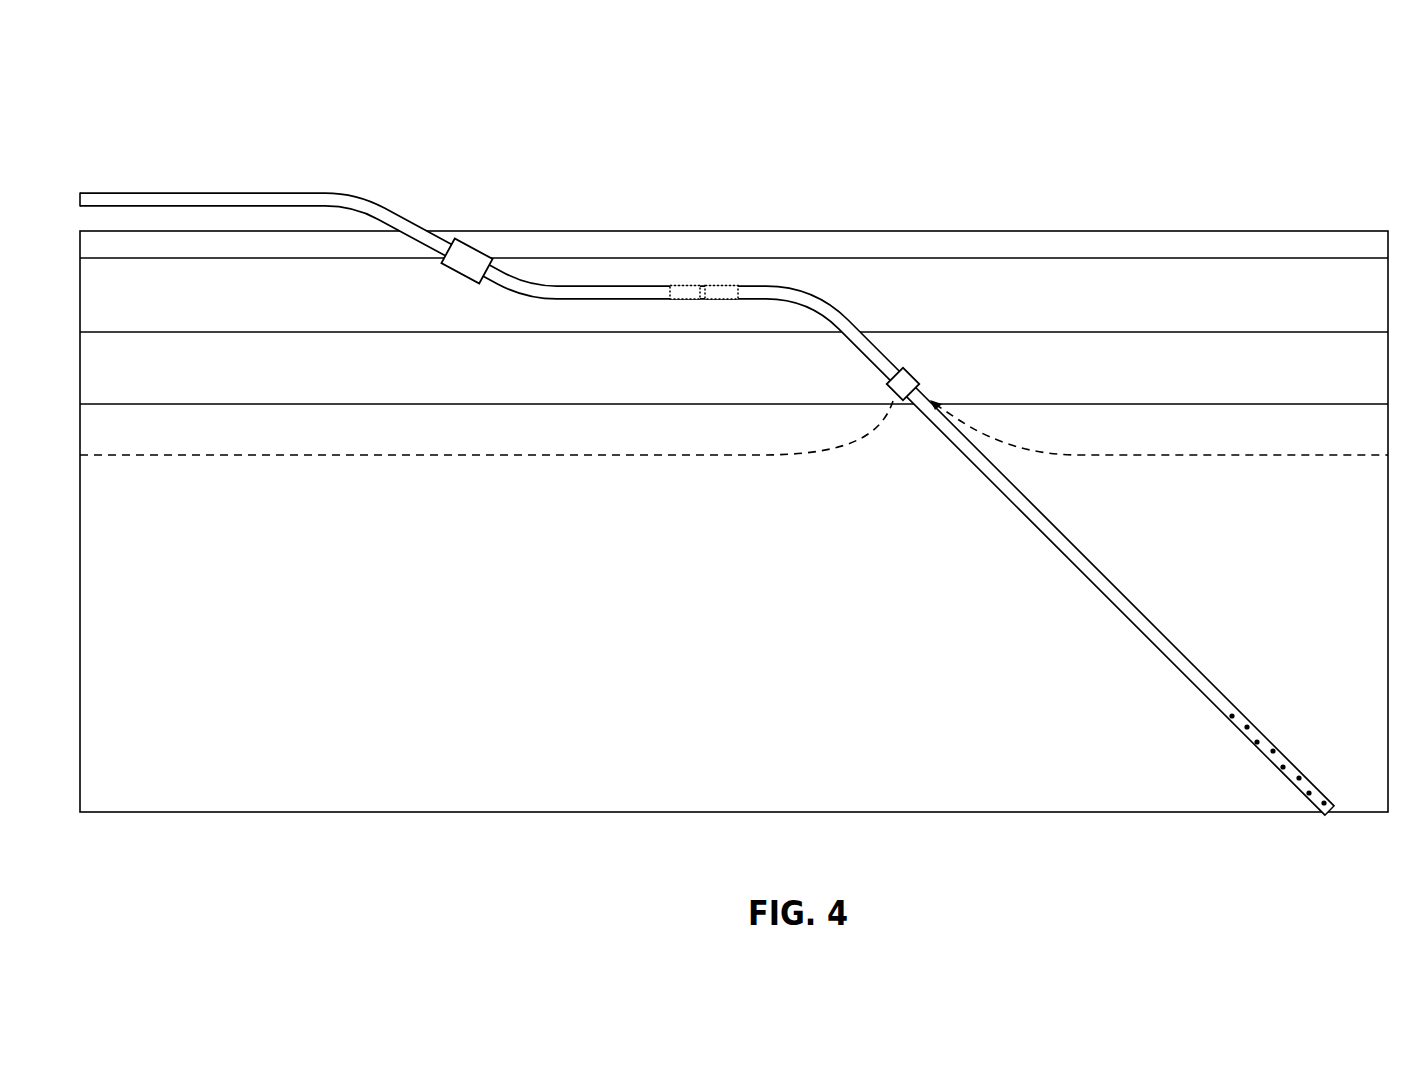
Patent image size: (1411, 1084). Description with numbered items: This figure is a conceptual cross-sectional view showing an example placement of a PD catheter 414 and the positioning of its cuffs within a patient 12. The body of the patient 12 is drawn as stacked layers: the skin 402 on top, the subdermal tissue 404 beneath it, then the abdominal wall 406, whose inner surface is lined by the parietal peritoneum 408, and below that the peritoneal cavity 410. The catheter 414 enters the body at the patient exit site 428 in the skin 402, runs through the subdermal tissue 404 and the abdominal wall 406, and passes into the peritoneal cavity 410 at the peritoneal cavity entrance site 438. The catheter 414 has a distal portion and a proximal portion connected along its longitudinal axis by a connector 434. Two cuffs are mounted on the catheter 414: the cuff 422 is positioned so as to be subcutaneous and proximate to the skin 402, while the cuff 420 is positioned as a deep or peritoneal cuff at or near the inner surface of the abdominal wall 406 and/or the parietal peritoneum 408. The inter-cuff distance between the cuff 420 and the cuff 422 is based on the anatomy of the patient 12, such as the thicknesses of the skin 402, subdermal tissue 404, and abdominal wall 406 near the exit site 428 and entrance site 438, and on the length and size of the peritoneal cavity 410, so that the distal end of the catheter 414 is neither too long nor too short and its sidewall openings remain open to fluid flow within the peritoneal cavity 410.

The patient 12 is at (1245, 112).
The PD catheter 414 is at (260, 104).
The skin 402 is at (218, 257).
The subdermal tissue 404 is at (361, 307).
The abdominal wall 406 is at (344, 382).
The parietal peritoneum 408 is at (553, 455).
The peritoneal cavity 410 is at (277, 621).
The cuff 420 is at (902, 370).
The cuff 422 is at (478, 265).
The patient exit site 428 is at (432, 228).
The connector 434 is at (690, 293).
The peritoneal cavity entrance site 438 is at (910, 404).